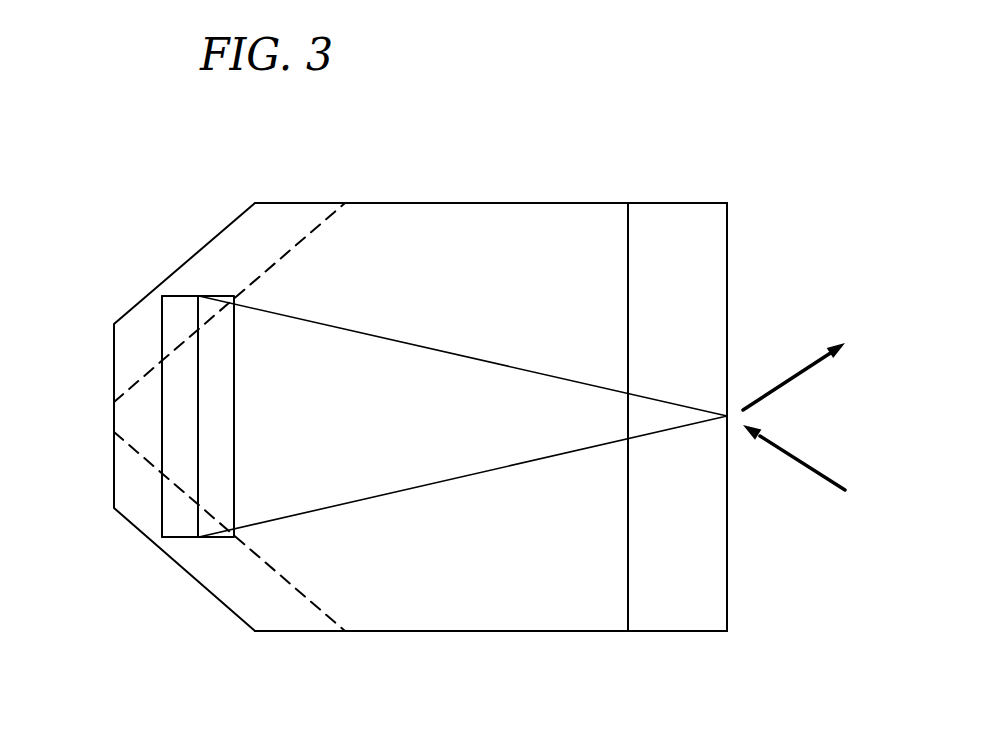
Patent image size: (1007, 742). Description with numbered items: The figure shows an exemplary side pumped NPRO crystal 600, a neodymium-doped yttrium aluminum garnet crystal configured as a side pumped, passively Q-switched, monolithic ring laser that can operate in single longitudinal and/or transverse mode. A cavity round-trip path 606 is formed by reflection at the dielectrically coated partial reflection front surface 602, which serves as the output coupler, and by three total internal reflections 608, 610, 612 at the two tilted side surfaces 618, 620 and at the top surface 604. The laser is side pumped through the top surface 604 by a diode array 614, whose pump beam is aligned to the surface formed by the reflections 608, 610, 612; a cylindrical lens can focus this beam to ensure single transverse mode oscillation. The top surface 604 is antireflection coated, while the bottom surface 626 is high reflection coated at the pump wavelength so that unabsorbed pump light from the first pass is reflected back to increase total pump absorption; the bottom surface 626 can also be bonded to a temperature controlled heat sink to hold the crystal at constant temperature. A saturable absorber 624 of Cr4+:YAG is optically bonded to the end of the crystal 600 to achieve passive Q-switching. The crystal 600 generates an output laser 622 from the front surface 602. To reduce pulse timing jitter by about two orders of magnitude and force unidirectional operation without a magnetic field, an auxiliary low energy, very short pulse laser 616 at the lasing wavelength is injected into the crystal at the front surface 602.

The side pumped NPRO crystal 600 is at (492, 136).
The front surface 602 is at (727, 453).
The top surface 604 is at (485, 608).
The cavity round-trip path 606 is at (496, 356).
The total internal reflection 608 is at (198, 296).
The total internal reflection 610 is at (197, 407).
The total internal reflection 612 is at (198, 538).
The diode array 614 is at (178, 442).
The auxiliary low energy, very short pulse laser 616 is at (825, 468).
The tilted side surface 618 is at (297, 243).
The tilted side surface 620 is at (297, 590).
The output laser 622 is at (840, 267).
The saturable absorber 624 is at (677, 608).
The bottom surface 626 is at (563, 218).